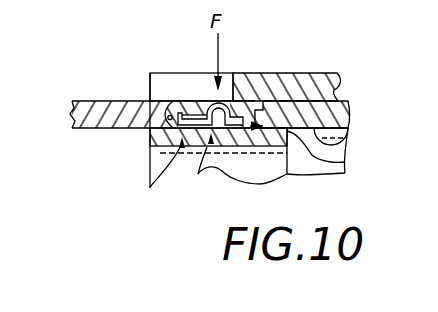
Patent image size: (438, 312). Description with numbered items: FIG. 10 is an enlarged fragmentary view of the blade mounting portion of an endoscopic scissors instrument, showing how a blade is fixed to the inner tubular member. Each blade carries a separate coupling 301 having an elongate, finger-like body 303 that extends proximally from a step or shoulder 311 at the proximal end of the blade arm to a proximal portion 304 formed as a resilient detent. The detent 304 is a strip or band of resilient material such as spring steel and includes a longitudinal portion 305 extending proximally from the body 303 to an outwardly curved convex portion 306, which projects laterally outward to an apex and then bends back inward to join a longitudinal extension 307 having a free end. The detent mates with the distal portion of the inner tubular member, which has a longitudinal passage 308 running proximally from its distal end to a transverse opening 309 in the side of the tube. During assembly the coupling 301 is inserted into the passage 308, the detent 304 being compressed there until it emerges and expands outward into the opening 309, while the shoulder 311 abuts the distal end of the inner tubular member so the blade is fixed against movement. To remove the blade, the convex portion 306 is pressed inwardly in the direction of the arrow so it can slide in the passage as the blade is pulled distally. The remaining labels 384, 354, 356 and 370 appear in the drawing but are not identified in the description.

The plate 384 is at (89, 101).
The housing block 354 is at (148, 79).
The longitudinal passage 308 is at (170, 114).
The outwardly curved convex portion 306 is at (207, 102).
The dome seal 356 is at (220, 100).
The transverse opening 309 is at (257, 101).
The lower support block 370 is at (347, 128).
The resilient detent 304 is at (345, 161).
The longitudinal extension 307 is at (277, 175).
The coupling 301 is at (211, 143).
The longitudinal portion 305 is at (182, 147).
The finger-like body 303 is at (152, 177).
The shoulder 311 is at (165, 131).